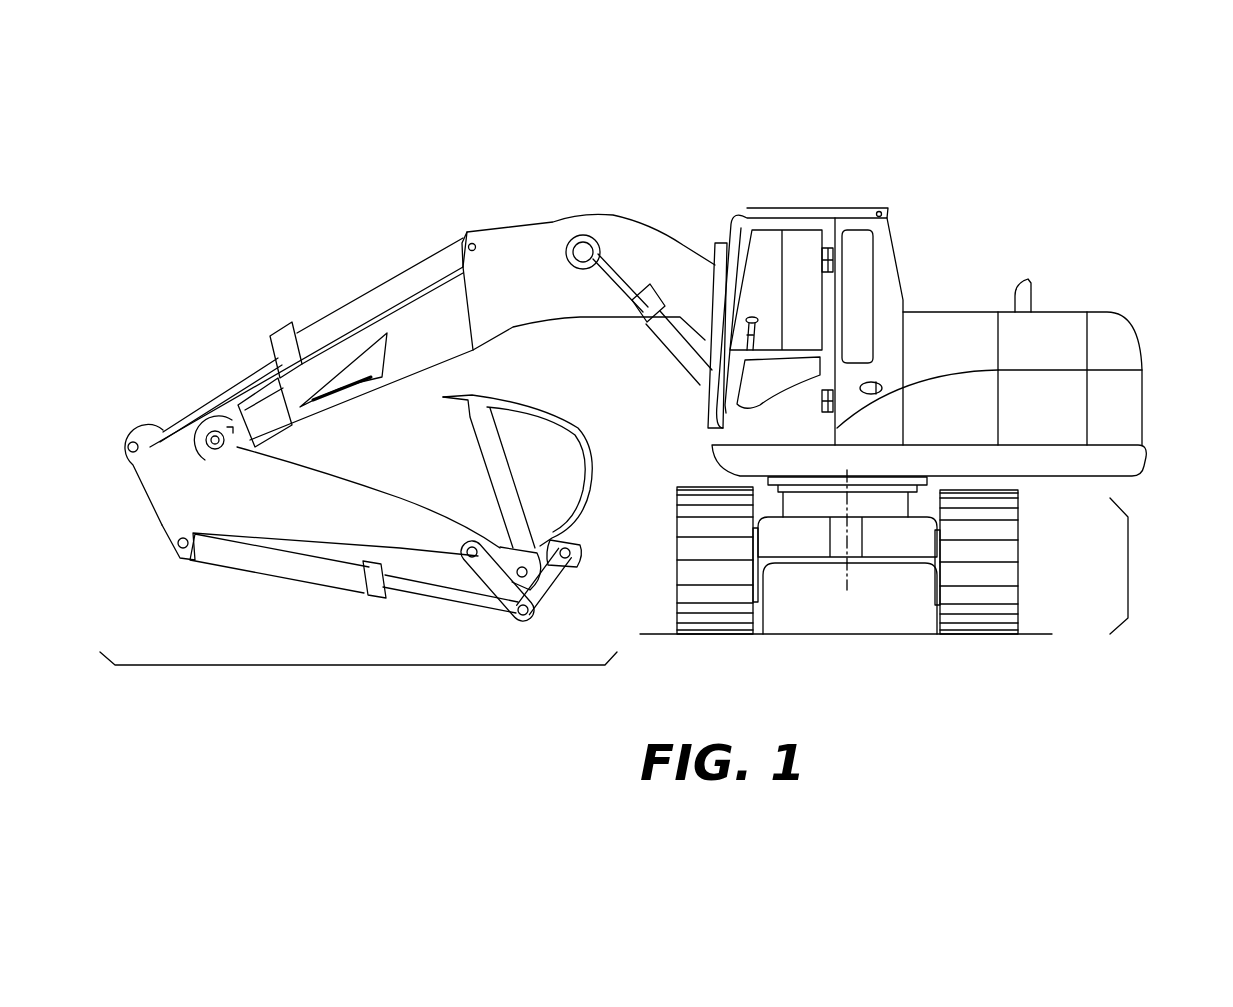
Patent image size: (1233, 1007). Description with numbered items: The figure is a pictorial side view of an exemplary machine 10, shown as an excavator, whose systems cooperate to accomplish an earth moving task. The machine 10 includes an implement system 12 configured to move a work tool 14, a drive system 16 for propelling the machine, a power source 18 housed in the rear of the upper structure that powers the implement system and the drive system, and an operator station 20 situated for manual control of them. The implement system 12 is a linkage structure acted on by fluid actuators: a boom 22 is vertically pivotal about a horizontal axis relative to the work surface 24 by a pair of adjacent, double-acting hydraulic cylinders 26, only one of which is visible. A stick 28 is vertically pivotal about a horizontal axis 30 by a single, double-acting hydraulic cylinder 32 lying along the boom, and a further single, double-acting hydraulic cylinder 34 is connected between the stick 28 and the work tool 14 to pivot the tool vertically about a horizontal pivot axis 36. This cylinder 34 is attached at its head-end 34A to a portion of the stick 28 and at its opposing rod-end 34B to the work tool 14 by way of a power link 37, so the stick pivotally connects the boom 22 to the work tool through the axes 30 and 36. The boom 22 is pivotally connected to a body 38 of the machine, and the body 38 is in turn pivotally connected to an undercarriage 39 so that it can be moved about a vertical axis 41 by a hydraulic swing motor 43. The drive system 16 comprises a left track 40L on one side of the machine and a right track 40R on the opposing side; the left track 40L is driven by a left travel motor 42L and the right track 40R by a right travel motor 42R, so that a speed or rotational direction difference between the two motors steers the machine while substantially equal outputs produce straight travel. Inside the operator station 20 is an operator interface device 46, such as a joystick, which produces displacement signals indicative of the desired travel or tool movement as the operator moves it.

The machine 10 is at (1056, 152).
The implement system 12 is at (348, 665).
The work tool 14 is at (530, 481).
The drive system 16 is at (916, 557).
The power source 18 is at (1053, 411).
The operator station 20 is at (805, 295).
The boom 22 is at (545, 303).
The work surface 24 is at (1030, 632).
The hydraulic cylinder 26 is at (680, 353).
The stick 28 is at (323, 520).
The horizontal axis 30 is at (200, 440).
The hydraulic cylinder 32 is at (390, 300).
The hydraulic cylinder 34 is at (341, 596).
The head-end 34A is at (218, 553).
The rod-end 34B is at (460, 600).
The horizontal pivot axis 36 is at (567, 528).
The power link 37 is at (543, 580).
The body 38 is at (1135, 462).
The undercarriage 39 is at (898, 548).
The left track 40L is at (677, 550).
The right track 40R is at (1018, 553).
The vertical axis 41 is at (847, 590).
The left travel motor 42L is at (763, 583).
The right travel motor 42R is at (935, 600).
The hydraulic swing motor 43 is at (905, 500).
The operator interface device 46 is at (760, 325).